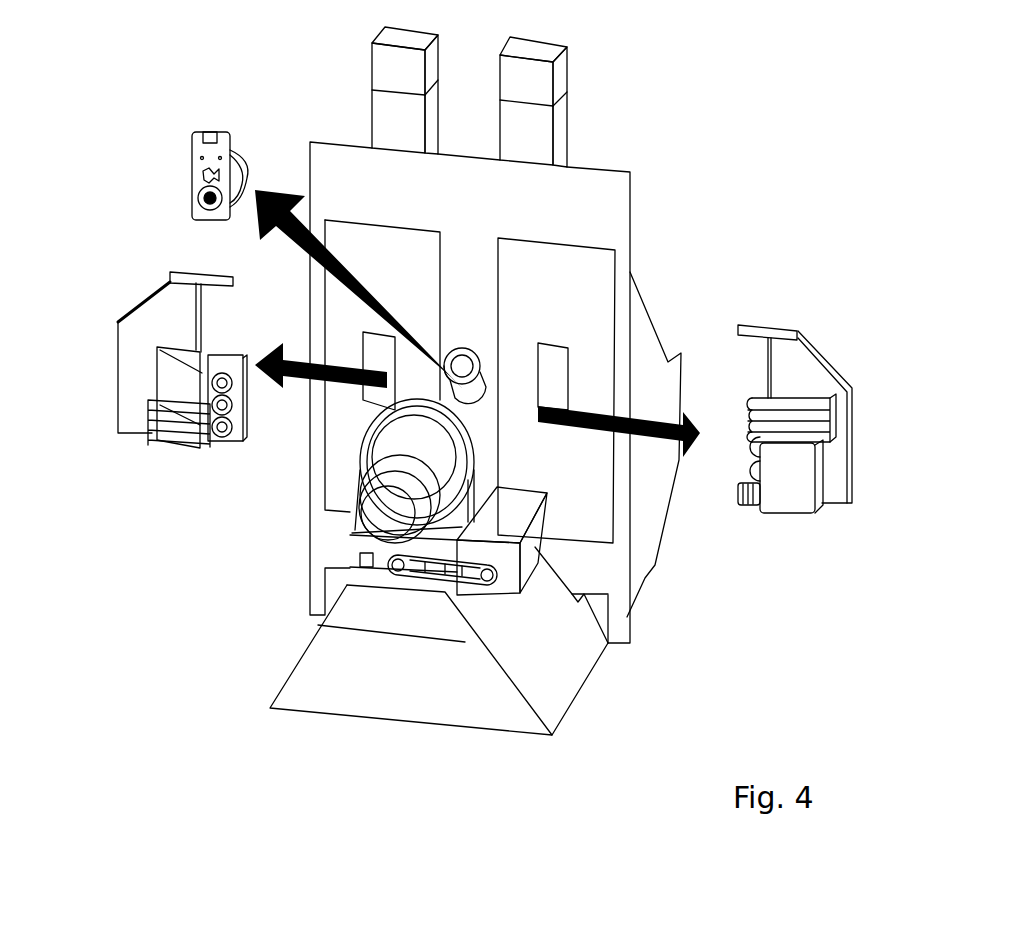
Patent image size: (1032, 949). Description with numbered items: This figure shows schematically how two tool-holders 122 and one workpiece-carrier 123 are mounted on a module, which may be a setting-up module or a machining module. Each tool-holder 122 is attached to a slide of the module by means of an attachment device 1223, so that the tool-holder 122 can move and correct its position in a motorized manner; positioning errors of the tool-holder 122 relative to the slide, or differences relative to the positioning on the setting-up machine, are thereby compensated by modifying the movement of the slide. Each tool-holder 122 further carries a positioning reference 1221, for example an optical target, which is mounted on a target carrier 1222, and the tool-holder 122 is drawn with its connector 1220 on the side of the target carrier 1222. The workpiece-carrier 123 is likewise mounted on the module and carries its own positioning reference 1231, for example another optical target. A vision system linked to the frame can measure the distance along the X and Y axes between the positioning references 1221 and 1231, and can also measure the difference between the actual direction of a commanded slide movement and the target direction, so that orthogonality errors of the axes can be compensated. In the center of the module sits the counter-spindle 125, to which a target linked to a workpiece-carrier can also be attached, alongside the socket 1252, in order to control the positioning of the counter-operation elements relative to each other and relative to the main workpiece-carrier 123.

The tool-holder 122 is at (133, 285).
The connector 1220 is at (217, 428).
The positioning reference 1221 is at (190, 270).
The target carrier 1222 is at (142, 358).
The attachment device 1223 is at (377, 400).
The workpiece-carrier 123 is at (192, 117).
The positioning reference 1231 is at (212, 128).
The counter-spindle 125 is at (381, 513).
The socket 1252 is at (477, 357).